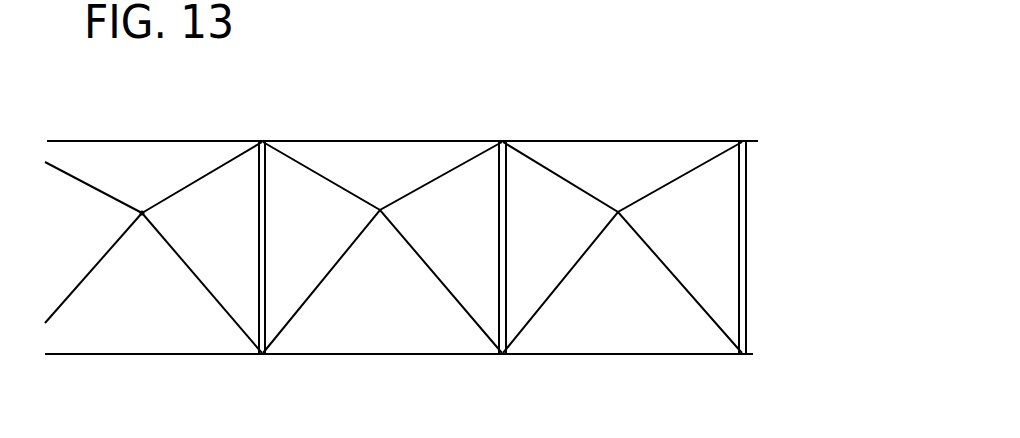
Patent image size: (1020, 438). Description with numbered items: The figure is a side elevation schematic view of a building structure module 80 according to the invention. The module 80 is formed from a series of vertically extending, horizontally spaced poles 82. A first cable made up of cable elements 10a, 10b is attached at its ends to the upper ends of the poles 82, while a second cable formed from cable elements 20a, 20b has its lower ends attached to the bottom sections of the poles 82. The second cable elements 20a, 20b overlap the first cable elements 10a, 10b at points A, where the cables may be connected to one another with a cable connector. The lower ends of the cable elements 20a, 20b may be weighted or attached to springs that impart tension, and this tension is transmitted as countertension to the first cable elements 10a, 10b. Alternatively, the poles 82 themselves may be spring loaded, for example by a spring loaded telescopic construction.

The first cable element 10a is at (92, 188).
The first cable element 10b is at (225, 163).
The second cable element 20a is at (83, 283).
The second cable element 20b is at (218, 302).
The point of connection A is at (146, 214).
The module 80 is at (782, 172).
The pole 82 is at (745, 267).